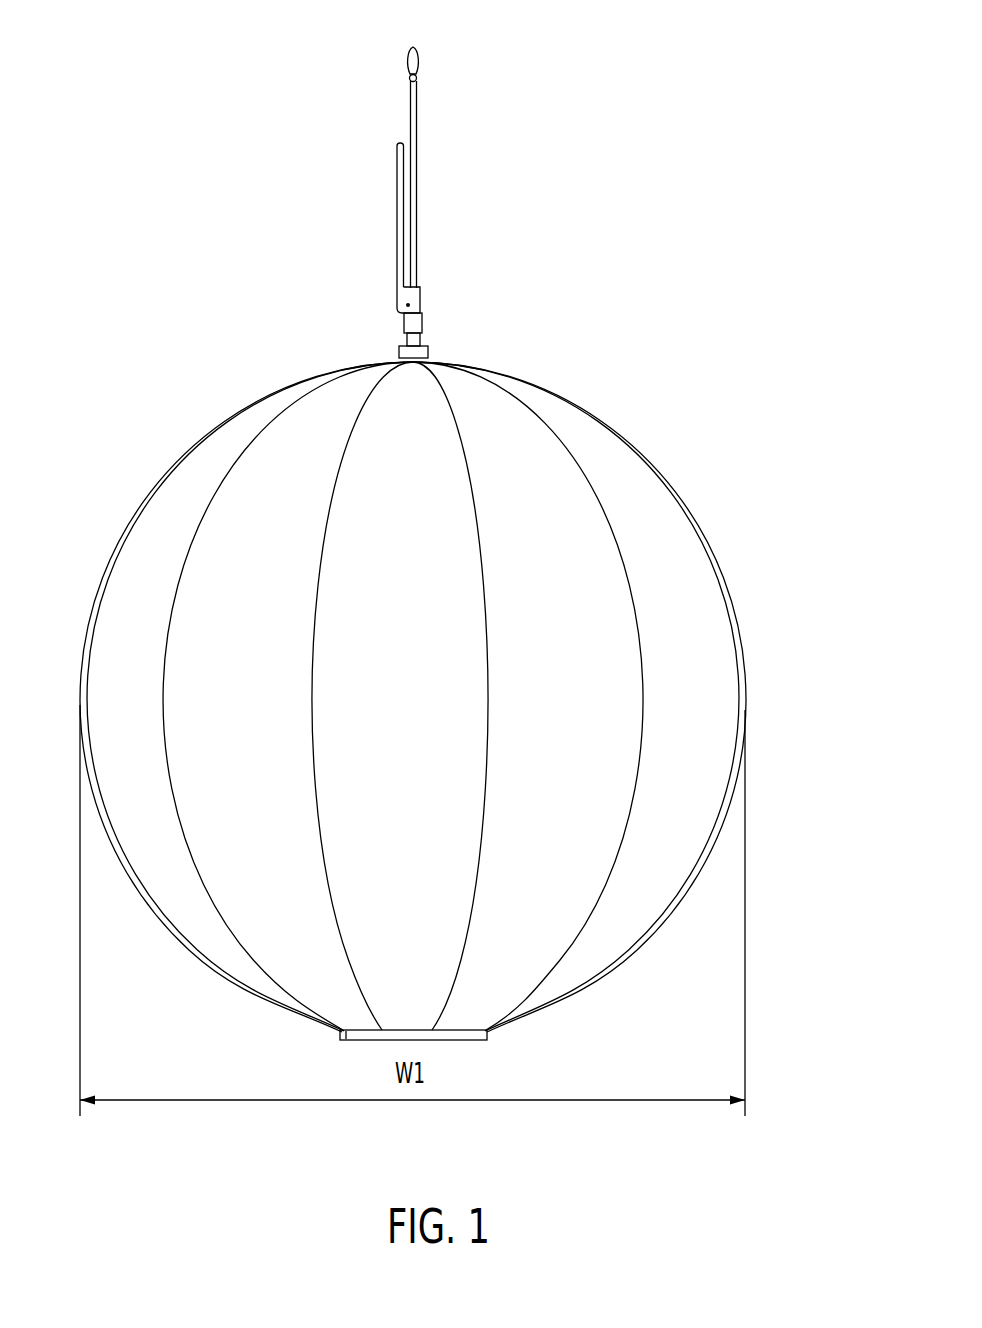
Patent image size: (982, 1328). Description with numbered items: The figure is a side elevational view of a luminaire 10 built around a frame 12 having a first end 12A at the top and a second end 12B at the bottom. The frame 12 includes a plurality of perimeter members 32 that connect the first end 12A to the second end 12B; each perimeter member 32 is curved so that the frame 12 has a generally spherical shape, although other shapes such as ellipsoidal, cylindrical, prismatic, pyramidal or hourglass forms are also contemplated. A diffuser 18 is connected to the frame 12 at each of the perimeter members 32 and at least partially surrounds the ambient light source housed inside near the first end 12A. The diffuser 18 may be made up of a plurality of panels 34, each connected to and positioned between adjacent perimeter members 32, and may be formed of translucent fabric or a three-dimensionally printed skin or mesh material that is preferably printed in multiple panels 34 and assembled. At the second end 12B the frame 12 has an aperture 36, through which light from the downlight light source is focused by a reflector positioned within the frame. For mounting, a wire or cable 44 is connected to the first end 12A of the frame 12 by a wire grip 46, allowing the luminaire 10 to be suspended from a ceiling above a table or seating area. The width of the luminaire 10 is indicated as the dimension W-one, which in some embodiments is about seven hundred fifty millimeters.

The luminaire 10 is at (700, 90).
The frame 12 is at (190, 430).
The first end of the frame 12A is at (397, 358).
The second end of the frame 12B is at (345, 1040).
The diffuser 18 is at (602, 460).
The perimeter members 32 is at (188, 543).
The panels 34 is at (683, 580).
The aperture 36 is at (481, 1040).
The wire or cable 44 is at (418, 95).
The wire grip 46 is at (420, 286).